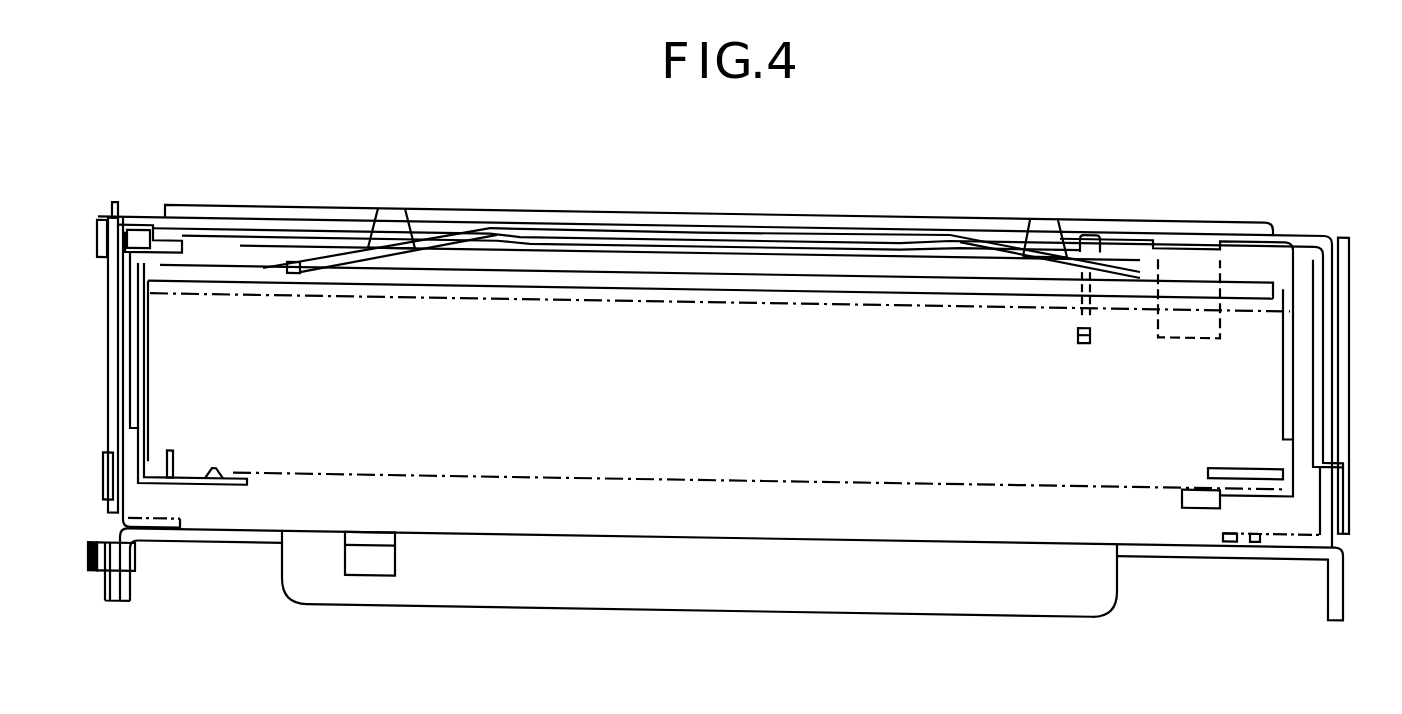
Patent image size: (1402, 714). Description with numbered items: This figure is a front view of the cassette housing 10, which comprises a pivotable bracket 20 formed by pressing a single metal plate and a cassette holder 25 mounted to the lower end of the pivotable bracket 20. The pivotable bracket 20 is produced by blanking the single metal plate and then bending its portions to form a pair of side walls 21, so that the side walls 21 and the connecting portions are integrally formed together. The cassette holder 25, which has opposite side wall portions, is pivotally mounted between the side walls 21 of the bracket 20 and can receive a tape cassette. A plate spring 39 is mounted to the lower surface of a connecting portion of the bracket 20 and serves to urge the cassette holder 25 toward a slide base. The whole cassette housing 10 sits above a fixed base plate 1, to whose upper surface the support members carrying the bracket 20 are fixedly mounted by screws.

The fixed base plate 1 is at (1167, 542).
The cassette housing 10 is at (1302, 223).
The pivotable bracket 20 is at (695, 212).
The side walls 21 is at (120, 347).
The cassette holder 25 is at (820, 281).
The plate spring 39 is at (1101, 229).